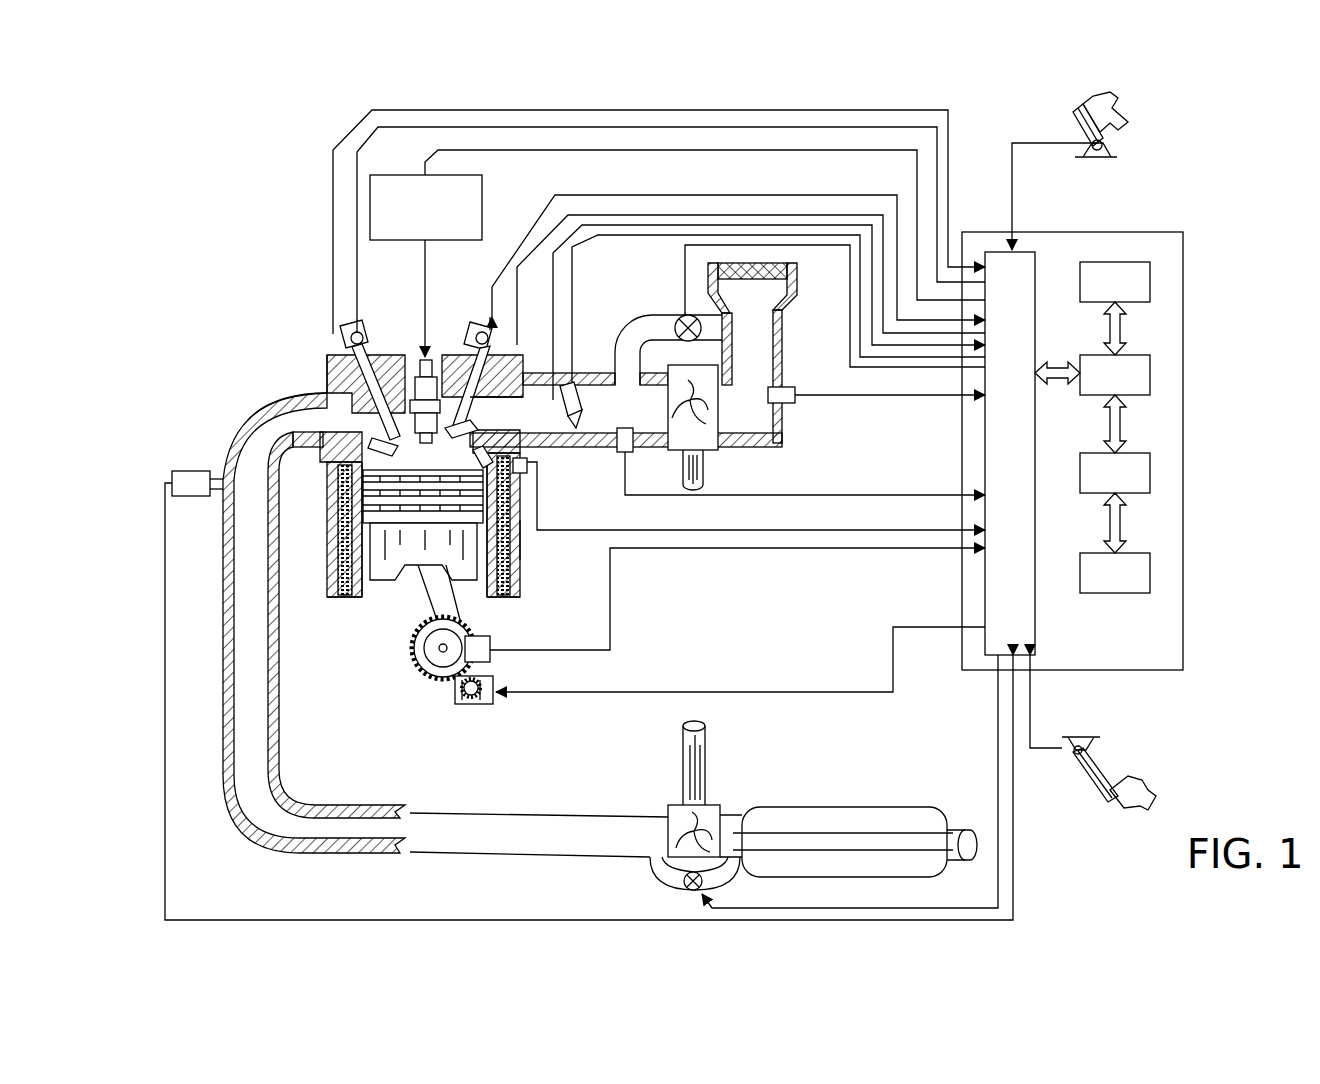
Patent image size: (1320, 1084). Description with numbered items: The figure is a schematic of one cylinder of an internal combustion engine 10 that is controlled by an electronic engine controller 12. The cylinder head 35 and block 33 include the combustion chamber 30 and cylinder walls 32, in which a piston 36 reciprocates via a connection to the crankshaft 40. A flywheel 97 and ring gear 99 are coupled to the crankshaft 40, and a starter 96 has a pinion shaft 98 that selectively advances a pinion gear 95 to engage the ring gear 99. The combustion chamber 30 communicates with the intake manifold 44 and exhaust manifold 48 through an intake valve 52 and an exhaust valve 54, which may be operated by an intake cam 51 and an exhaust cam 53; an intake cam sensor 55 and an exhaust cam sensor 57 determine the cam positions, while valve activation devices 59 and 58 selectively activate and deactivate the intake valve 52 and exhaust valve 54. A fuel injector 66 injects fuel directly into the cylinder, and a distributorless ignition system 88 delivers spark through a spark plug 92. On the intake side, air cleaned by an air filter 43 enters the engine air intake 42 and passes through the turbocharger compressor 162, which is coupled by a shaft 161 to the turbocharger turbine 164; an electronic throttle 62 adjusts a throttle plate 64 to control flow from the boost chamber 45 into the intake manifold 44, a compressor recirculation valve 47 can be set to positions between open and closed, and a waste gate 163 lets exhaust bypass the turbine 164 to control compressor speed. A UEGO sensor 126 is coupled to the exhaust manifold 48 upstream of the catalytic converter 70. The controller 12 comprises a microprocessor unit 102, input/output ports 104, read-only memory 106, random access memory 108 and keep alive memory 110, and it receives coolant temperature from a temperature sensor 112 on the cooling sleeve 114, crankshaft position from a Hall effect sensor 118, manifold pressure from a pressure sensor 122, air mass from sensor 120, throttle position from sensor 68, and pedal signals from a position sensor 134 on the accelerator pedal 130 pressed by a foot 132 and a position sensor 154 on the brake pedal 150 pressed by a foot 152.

The internal combustion engine 10 is at (262, 318).
The electronic engine controller 12 is at (1183, 235).
The combustion chamber 30 is at (418, 455).
The cylinder walls 32 is at (360, 600).
The block 33 is at (325, 473).
The cylinder head 35 is at (324, 356).
The piston 36 is at (408, 545).
The crankshaft 40 is at (418, 668).
The engine air intake 42 is at (703, 303).
The air filter 43 is at (770, 285).
The intake manifold 44 is at (525, 421).
The boost chamber 45 is at (616, 421).
The compressor recirculation valve 47 is at (678, 318).
The exhaust manifold 48 is at (284, 429).
The intake cam 51 is at (486, 322).
The intake valve 52 is at (472, 428).
The exhaust cam 53 is at (360, 322).
The exhaust valve 54 is at (323, 392).
The intake cam sensor 55 is at (495, 352).
The exhaust cam sensor 57 is at (345, 332).
The valve activation device 58 is at (372, 350).
The valve activation device 59 is at (475, 344).
The electronic throttle 62 is at (578, 396).
The throttle plate 64 is at (576, 424).
The fuel injector 66 is at (535, 470).
The throttle position sensor 68 is at (512, 385).
The catalytic converter 70 is at (780, 807).
The distributorless ignition system 88 is at (386, 175).
The spark plug 92 is at (428, 360).
The pinion gear 95 is at (482, 704).
The starter 96 is at (490, 702).
The flywheel 97 is at (422, 650).
The pinion shaft 98 is at (460, 700).
The ring gear 99 is at (438, 692).
The microprocessor unit 102 is at (1150, 372).
The input/output ports 104 is at (1036, 265).
The read-only memory 106 is at (1150, 280).
The random access memory 108 is at (1150, 470).
The keep alive memory 110 is at (1150, 570).
The temperature sensor 112 is at (525, 495).
The cooling sleeve 114 is at (520, 553).
The Hall effect sensor 118 is at (490, 640).
The air mass sensor 120 is at (785, 390).
The pressure sensor 122 is at (618, 450).
The UEGO sensor 126 is at (172, 478).
The accelerator pedal 130 is at (1078, 122).
The foot 132 is at (1122, 100).
The position sensor 134 is at (1112, 148).
The brake pedal 150 is at (1100, 790).
The foot 152 is at (1132, 778).
The position sensor 154 is at (1068, 744).
The shaft 161 is at (683, 470).
The turbocharger compressor 162 is at (700, 432).
The waste gate 163 is at (685, 893).
The turbocharger turbine 164 is at (672, 805).